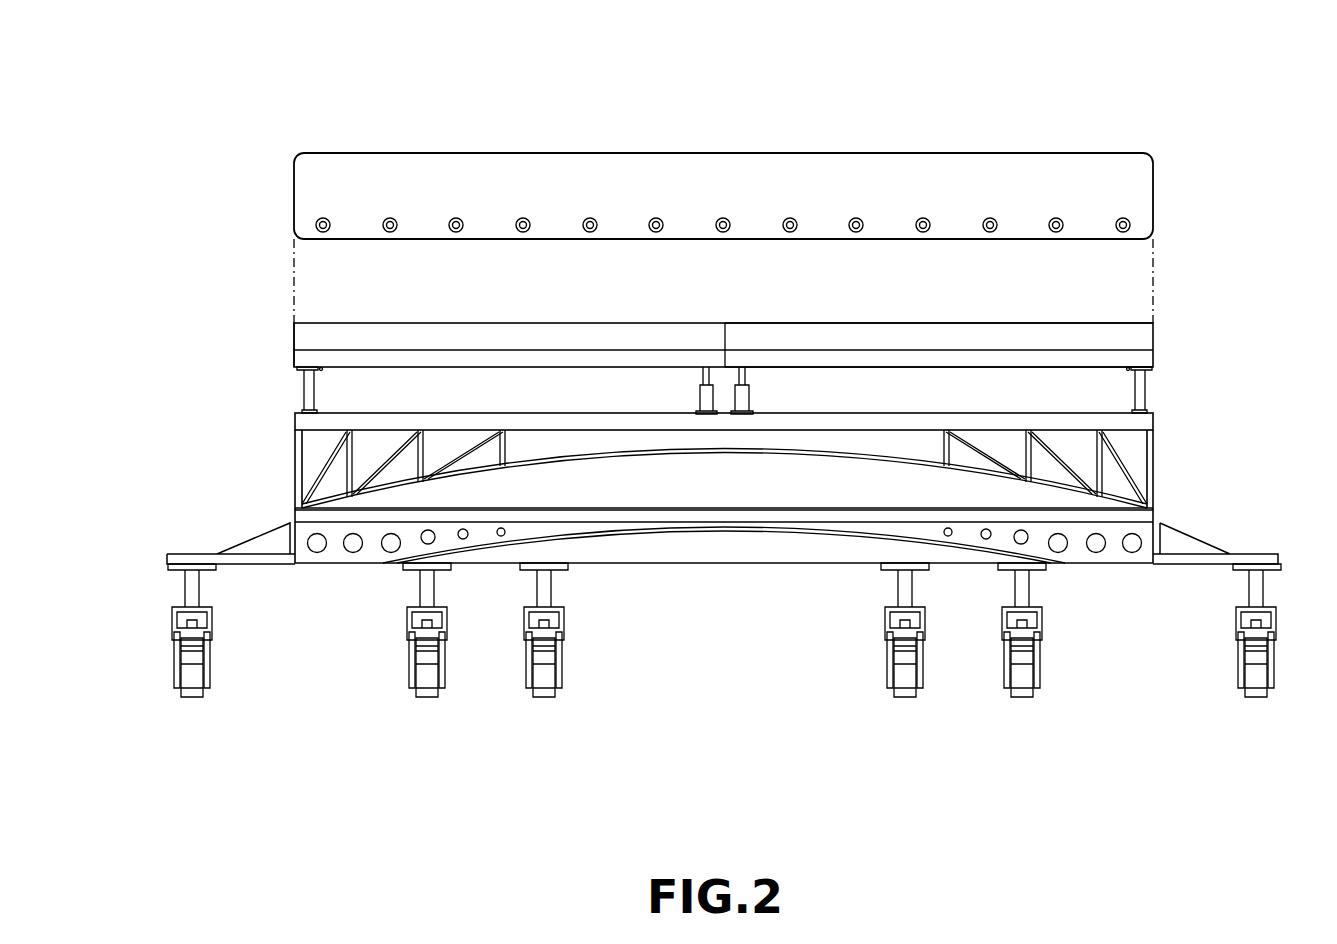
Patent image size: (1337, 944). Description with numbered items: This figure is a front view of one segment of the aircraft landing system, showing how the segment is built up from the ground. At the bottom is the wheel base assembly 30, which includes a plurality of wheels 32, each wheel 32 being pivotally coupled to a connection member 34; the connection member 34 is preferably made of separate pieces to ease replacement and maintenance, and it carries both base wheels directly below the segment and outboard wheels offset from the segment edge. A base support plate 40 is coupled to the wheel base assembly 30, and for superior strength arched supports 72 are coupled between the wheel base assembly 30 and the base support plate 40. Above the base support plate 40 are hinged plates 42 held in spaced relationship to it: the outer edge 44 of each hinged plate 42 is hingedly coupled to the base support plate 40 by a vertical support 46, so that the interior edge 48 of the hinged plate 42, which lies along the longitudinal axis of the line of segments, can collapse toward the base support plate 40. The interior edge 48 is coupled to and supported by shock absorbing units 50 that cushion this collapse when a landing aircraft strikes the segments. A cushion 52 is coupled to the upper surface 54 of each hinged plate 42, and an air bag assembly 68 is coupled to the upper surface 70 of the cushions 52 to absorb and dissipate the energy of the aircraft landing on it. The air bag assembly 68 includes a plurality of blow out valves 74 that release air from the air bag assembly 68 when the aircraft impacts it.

The wheel base assembly 30 is at (725, 698).
The wheel 32 is at (548, 695).
The connection member 34 is at (1280, 567).
The base support plate 40 is at (307, 423).
The hinged plate 42 is at (430, 358).
The outer edge 44 is at (295, 360).
The vertical support 46 is at (307, 390).
The interior edge 48 is at (725, 342).
The shock absorbing unit 50 is at (705, 397).
The cushion 52 is at (868, 333).
The upper surface 54 is at (947, 352).
The air bag assembly 68 is at (1007, 177).
The upper surface 70 is at (795, 323).
The arched support 72 is at (1137, 463).
The blow out valve 74 is at (931, 223).